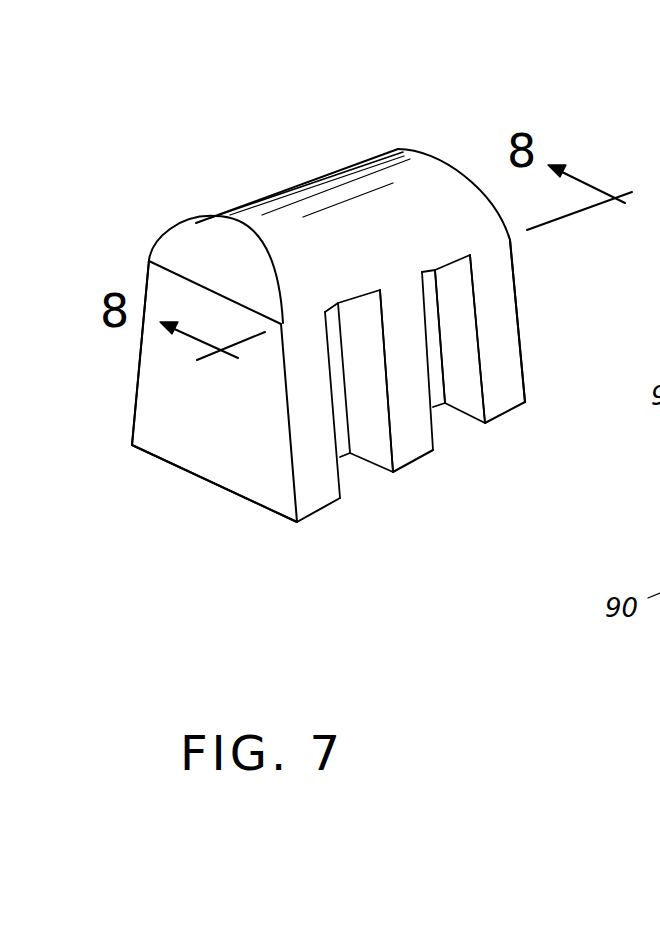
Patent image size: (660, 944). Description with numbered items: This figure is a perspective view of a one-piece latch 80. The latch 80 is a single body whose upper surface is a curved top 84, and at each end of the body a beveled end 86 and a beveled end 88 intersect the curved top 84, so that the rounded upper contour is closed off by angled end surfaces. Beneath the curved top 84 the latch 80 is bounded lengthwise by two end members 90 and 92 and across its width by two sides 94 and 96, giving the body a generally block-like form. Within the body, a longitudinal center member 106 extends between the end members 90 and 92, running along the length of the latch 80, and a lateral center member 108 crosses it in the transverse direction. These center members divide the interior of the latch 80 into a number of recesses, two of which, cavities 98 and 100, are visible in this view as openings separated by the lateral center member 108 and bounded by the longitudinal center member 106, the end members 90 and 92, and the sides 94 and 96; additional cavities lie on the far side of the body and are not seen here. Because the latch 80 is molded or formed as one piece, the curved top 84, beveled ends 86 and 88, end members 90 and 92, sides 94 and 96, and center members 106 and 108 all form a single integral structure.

The one-piece latch 80 is at (267, 153).
The curved top 84 is at (328, 197).
The beveled end 86 is at (200, 255).
The beveled end 88 is at (432, 182).
The end member 90 is at (205, 438).
The end member 92 is at (462, 282).
The side 94 is at (503, 353).
The side 96 is at (158, 378).
The cavity 98 is at (353, 472).
The cavity 100 is at (450, 420).
The longitudinal center member 106 is at (440, 320).
The lateral center member 108 is at (377, 405).